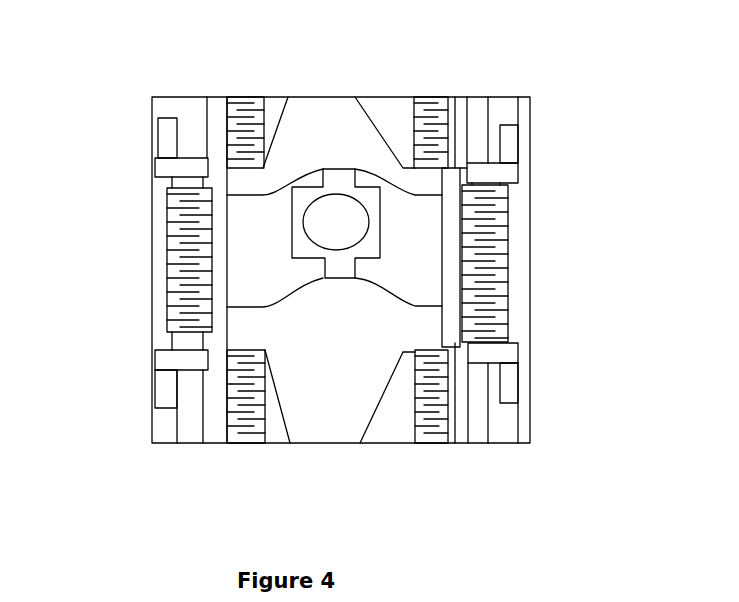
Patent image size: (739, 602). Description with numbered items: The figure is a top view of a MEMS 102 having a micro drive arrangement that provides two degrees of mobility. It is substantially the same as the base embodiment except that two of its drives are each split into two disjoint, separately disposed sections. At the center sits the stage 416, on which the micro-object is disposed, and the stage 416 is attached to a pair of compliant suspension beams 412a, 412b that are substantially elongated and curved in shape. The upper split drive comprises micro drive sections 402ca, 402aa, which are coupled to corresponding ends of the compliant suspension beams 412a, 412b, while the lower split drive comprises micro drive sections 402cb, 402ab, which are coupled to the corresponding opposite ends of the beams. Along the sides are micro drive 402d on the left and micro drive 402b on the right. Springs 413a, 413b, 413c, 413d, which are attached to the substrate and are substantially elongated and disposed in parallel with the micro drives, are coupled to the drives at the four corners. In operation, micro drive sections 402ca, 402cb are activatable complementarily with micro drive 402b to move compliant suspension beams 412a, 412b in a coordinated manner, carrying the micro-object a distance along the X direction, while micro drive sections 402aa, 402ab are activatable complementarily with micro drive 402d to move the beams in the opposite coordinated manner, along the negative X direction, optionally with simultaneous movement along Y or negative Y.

The MEMS 102 is at (591, 171).
The micro drive section 402ca is at (268, 110).
The micro drive section 402aa is at (425, 108).
The micro drive section 402cb is at (258, 425).
The micro drive section 402ab is at (427, 408).
The micro drive 402d is at (158, 222).
The micro drive 402b is at (485, 320).
The compliant suspension beam 412a is at (297, 173).
The compliant suspension beam 412b is at (377, 295).
The spring 413a is at (175, 153).
The spring 413b is at (507, 157).
The spring 413c is at (505, 388).
The spring 413d is at (167, 390).
The stage 416 is at (375, 217).